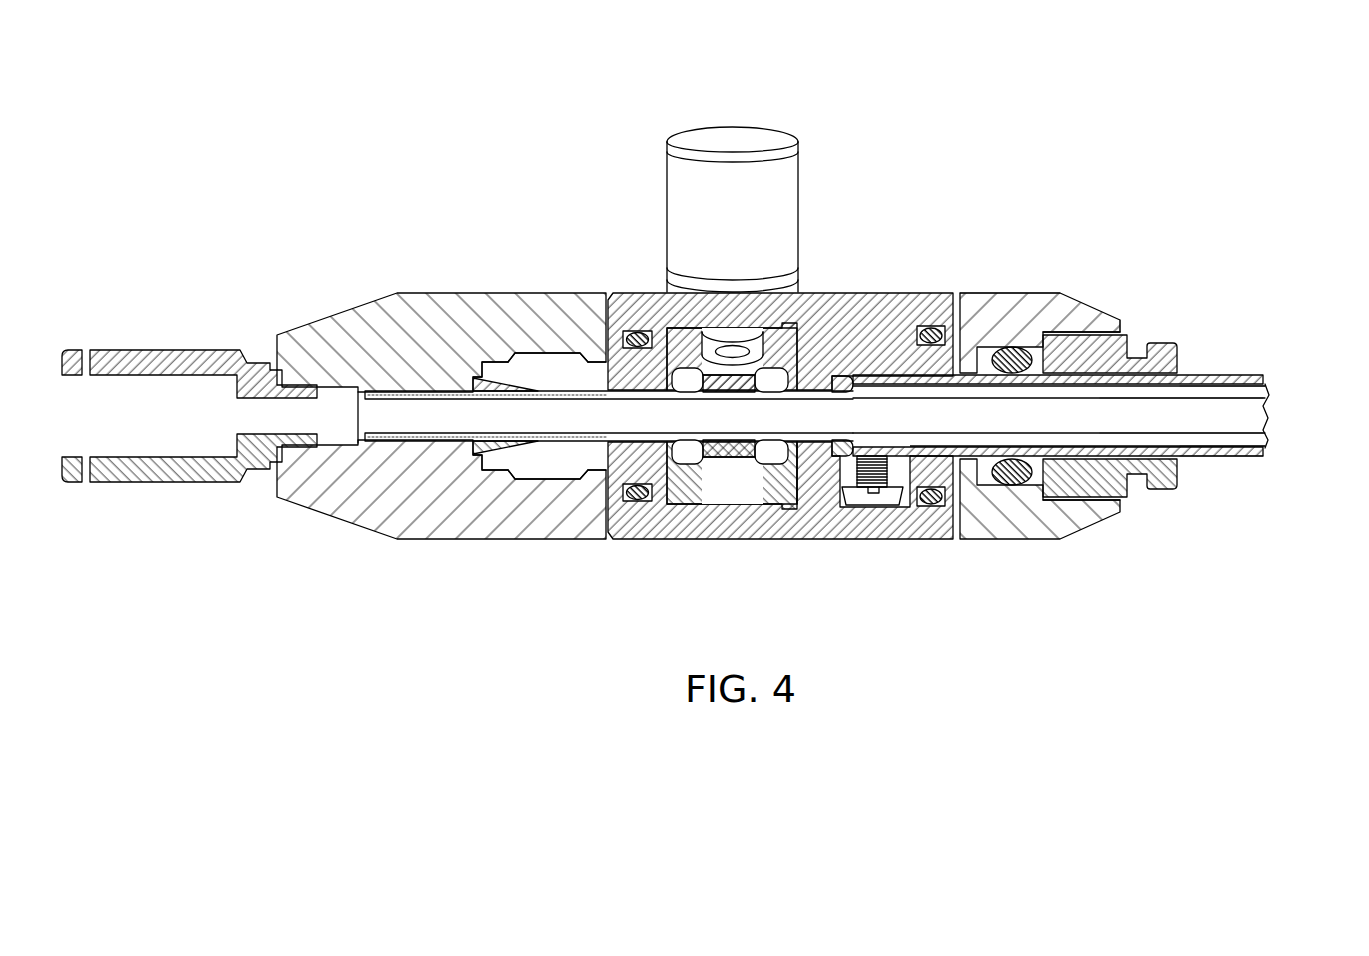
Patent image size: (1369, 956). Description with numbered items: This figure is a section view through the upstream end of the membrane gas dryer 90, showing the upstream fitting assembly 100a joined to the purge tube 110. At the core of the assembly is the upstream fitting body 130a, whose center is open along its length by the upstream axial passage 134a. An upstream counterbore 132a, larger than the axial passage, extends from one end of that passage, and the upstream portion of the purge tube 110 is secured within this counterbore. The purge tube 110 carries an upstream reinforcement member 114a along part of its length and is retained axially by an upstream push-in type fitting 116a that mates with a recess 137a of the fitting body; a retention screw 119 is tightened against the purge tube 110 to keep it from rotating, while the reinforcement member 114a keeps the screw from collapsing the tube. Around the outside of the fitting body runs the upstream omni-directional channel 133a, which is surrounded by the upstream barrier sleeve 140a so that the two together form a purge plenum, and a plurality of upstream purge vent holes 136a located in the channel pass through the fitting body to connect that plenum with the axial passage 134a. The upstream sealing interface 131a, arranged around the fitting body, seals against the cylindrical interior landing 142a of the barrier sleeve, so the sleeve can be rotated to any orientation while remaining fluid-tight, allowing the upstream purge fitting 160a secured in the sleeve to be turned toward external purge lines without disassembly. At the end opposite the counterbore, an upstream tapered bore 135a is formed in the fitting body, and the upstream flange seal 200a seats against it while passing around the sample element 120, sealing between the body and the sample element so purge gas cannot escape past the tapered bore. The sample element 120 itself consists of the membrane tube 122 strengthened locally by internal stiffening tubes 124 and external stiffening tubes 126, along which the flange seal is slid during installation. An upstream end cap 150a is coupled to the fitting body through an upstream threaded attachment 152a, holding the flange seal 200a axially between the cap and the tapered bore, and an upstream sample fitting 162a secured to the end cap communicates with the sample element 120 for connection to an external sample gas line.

The membrane gas dryer 90 is at (1203, 203).
The upstream fitting assembly 100a is at (1045, 175).
The purge tube 110 is at (1222, 508).
The upstream reinforcement member 114a is at (861, 376).
The upstream push-in type fitting 116a is at (1157, 486).
The retention screw 119 is at (881, 506).
The sample element 120 is at (1266, 378).
The membrane tube 122 is at (1245, 433).
The internal stiffening tubes 124 is at (387, 430).
The external stiffening tubes 126 is at (380, 441).
The upstream fitting body 130a is at (1040, 467).
The upstream sealing interface 131a is at (946, 546).
The upstream counterbore 132a is at (957, 376).
The upstream omni-directional channel 133a is at (747, 496).
The upstream axial passage 134a is at (723, 445).
The upstream tapered bore 135a is at (527, 376).
The upstream purge vent holes 136a is at (690, 388).
The recess 137a is at (1111, 336).
The upstream barrier sleeve 140a is at (780, 467).
The cylindrical interior landing 142a is at (786, 496).
The upstream end cap 150a is at (441, 468).
The upstream threaded attachment 152a is at (564, 352).
The upstream purge fitting 160a is at (667, 192).
The upstream sample fitting 162a is at (173, 350).
The upstream flange seal 200a is at (471, 373).